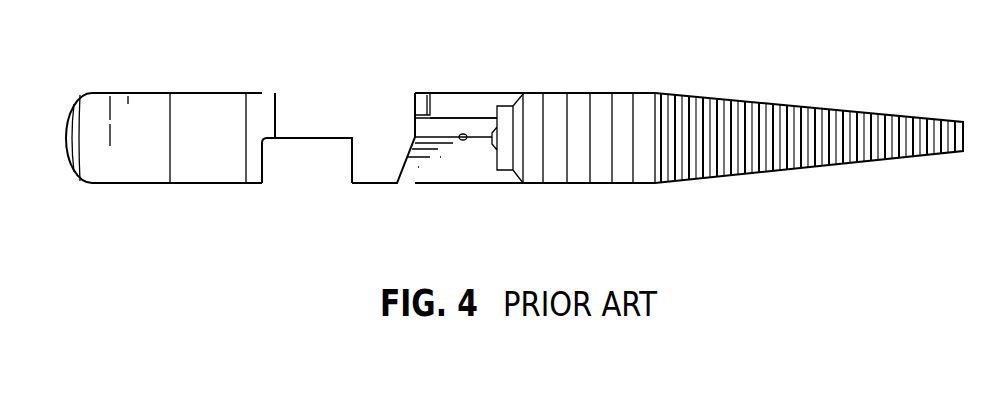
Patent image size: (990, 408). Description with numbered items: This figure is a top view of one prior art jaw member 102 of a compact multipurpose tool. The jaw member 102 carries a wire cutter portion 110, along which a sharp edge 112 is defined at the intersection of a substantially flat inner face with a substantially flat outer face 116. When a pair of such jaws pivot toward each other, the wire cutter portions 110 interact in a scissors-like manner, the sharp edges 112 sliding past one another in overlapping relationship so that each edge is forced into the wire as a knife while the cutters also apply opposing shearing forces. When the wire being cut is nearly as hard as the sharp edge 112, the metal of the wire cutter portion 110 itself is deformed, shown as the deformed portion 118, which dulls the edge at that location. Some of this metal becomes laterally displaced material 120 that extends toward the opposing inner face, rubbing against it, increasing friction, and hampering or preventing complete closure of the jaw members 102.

The jaw member 102 is at (618, 92).
The wire cutter portion 110 is at (507, 223).
The sharp edge 112 is at (425, 93).
The outer face 116 is at (455, 102).
The deformed portion 118 is at (463, 137).
The laterally displaced material 120 is at (463, 140).